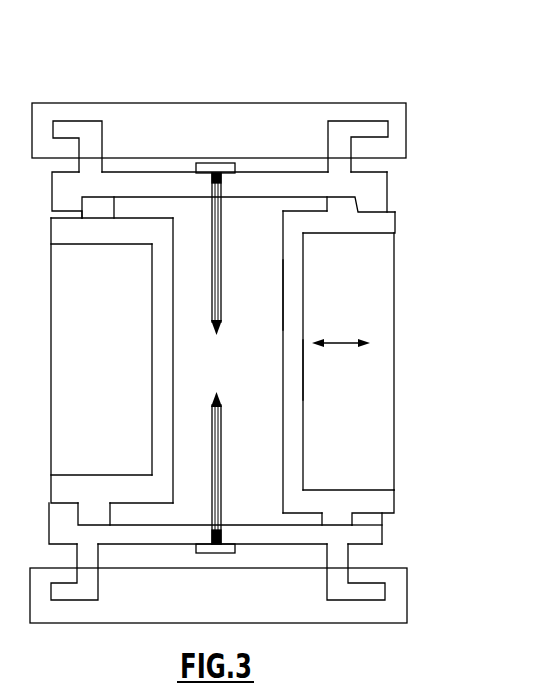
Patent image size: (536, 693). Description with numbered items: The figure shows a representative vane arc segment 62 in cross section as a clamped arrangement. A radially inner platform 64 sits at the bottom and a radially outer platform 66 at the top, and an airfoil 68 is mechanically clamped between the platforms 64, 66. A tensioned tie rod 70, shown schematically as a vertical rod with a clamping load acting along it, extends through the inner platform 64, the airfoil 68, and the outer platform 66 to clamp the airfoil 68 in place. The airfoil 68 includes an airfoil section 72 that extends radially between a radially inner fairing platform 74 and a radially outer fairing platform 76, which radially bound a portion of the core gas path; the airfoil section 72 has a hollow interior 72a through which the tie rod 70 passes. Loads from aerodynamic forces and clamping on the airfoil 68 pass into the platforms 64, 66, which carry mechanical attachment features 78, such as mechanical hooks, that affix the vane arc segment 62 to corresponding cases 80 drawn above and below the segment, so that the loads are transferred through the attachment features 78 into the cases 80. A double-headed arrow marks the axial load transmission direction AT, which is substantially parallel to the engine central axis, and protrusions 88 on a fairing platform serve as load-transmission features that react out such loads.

The vane arc segment 62 is at (94, 365).
The radially inner platform 64 is at (383, 531).
The radially outer platform 66 is at (388, 192).
The airfoil 68 is at (313, 370).
The tie rod 70 is at (221, 297).
The airfoil section 72 is at (304, 327).
The hollow interior 72a is at (278, 298).
The radially inner fairing platform 74 is at (343, 490).
The radially outer fairing platform 76 is at (366, 233).
The mechanical attachment features 78 is at (66, 144).
The cases 80 is at (315, 103).
The protrusions 88 is at (124, 207).
The axial load transmission direction AT is at (343, 343).